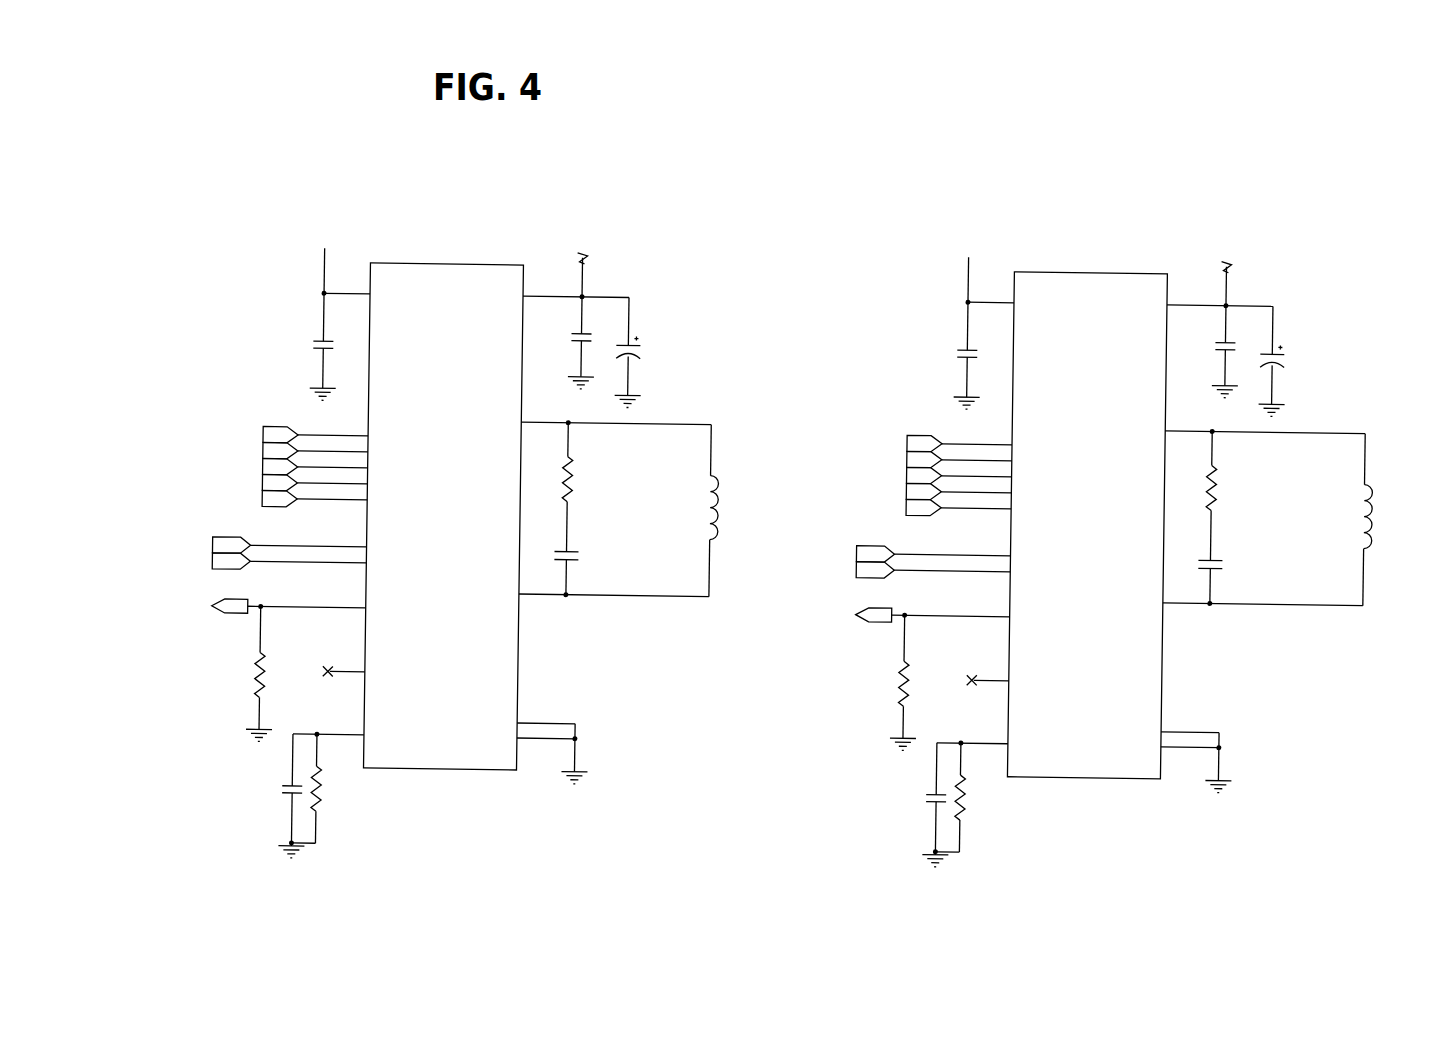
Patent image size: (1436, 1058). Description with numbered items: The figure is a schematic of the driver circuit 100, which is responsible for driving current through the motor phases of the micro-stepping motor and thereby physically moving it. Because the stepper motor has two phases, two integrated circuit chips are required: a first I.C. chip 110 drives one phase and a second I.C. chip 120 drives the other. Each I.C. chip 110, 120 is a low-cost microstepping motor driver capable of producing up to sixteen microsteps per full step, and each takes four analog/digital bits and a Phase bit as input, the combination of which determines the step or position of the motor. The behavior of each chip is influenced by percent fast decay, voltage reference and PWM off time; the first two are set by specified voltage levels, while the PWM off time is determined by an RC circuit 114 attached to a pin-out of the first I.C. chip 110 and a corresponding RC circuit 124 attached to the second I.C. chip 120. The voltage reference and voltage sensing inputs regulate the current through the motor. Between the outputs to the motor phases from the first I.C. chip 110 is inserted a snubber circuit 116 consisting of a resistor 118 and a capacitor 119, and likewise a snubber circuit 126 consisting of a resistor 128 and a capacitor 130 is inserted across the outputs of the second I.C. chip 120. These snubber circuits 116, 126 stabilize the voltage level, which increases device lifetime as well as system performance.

The driver circuit 100 is at (1147, 152).
The I.C. chip 110 is at (456, 807).
The RC circuit 114 is at (383, 718).
The snubber circuit 116 is at (580, 518).
The resistor 118 is at (609, 458).
The capacitor 119 is at (556, 578).
The I.C. chip 120 is at (1102, 571).
The RC circuit 124 is at (1088, 526).
The snubber circuit 126 is at (1302, 562).
The resistor 128 is at (1312, 447).
The capacitor 130 is at (1224, 590).